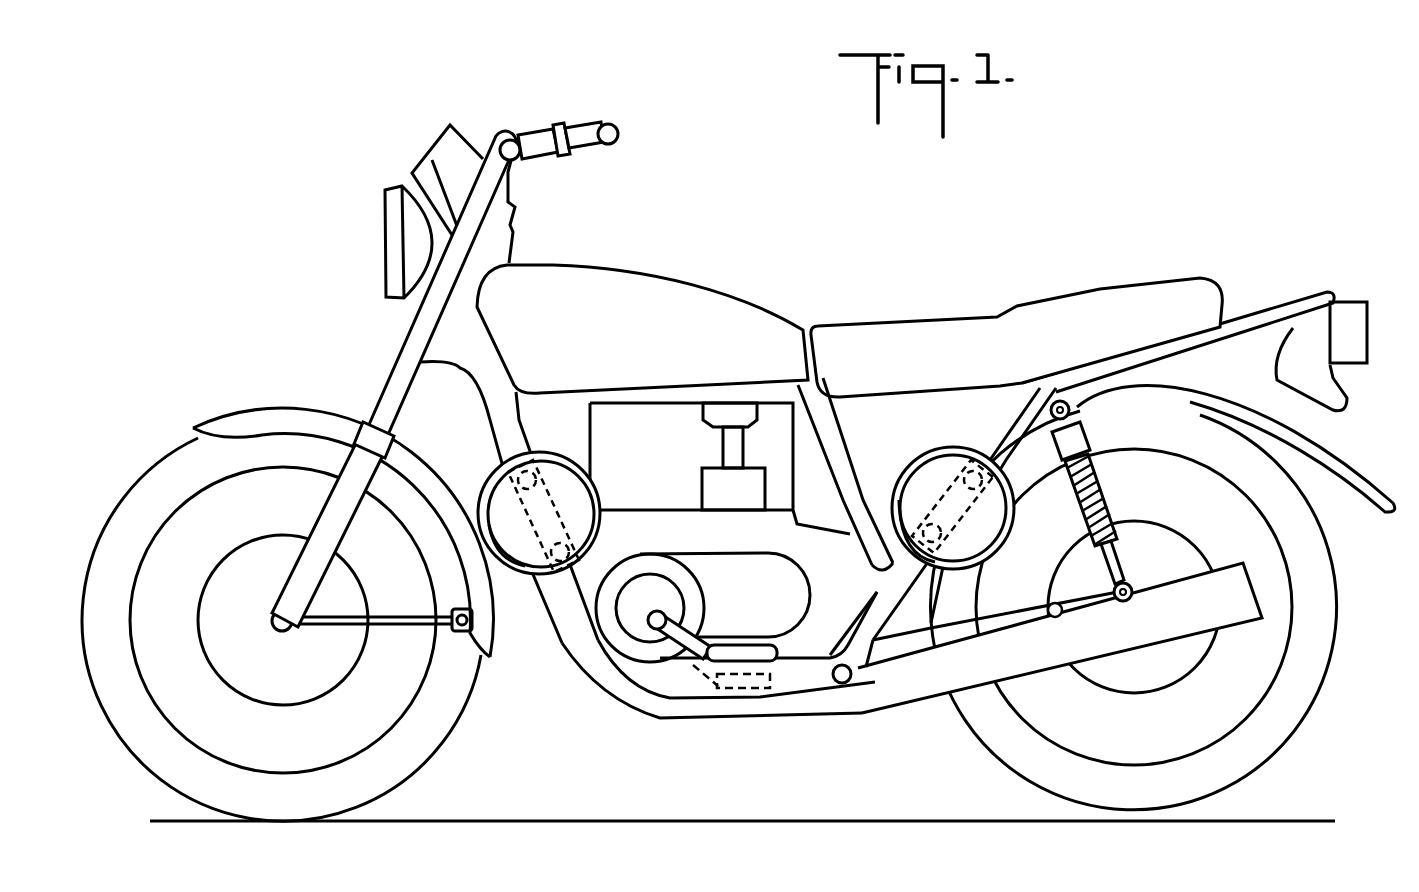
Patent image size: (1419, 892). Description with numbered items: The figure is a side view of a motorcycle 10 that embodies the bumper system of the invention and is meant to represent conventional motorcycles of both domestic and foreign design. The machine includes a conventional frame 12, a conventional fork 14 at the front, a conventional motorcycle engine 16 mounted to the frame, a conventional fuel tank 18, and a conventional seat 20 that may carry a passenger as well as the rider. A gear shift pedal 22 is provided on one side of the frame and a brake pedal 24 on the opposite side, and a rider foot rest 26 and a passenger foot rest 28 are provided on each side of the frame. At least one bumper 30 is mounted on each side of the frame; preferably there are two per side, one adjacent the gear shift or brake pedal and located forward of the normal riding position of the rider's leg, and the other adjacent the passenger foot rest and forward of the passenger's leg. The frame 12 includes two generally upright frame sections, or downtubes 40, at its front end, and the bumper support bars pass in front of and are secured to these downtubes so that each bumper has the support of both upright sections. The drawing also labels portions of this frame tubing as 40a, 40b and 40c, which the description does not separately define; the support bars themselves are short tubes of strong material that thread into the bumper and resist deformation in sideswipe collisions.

The motorcycle 10 is at (738, 471).
The frame 12 is at (598, 636).
The fork 14 is at (403, 384).
The motorcycle engine 16 is at (652, 410).
The fuel tank 18 is at (643, 283).
The seat 20 is at (1146, 288).
The gear shift pedal 22 is at (664, 618).
The brake pedal 24 is at (773, 688).
The rider foot rest 26 is at (850, 680).
The passenger foot rest 28 is at (1047, 600).
The bumper 30 is at (596, 493).
The downtubes 40 is at (503, 433).
The lower tube portion 40a is at (680, 686).
The rear tube portion 40b is at (1005, 433).
The front tube portion 40c is at (874, 553).